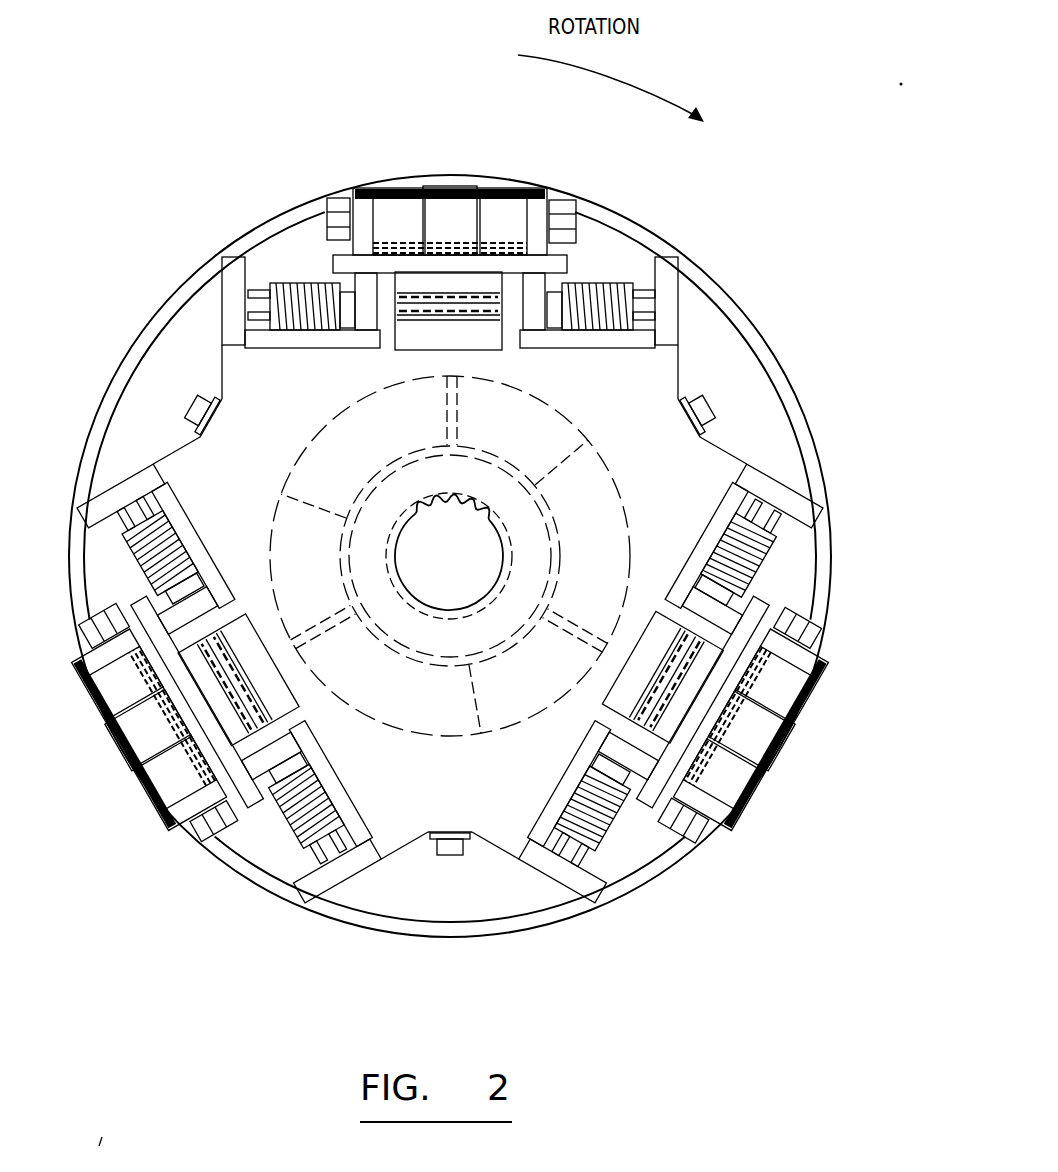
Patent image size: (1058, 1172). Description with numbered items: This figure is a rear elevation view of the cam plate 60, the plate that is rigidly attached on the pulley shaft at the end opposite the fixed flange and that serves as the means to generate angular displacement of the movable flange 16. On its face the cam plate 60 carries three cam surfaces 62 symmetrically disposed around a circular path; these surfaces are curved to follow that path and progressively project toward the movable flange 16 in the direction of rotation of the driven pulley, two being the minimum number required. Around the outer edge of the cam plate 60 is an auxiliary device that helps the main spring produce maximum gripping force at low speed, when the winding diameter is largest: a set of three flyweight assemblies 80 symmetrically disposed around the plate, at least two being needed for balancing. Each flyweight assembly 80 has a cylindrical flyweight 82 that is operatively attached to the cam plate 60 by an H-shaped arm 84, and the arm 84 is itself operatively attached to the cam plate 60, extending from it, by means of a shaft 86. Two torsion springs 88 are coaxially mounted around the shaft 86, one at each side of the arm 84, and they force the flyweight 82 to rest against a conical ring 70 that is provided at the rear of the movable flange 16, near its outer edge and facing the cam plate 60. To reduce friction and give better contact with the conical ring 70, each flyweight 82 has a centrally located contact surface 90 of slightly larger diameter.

The movable flange 16 is at (140, 316).
The cam plate 60 is at (270, 440).
The cam surfaces 62 is at (450, 556).
The conical ring 70 is at (746, 362).
The flyweight assemblies 80 is at (450, 494).
The cylindrical flyweight 82 is at (507, 190).
The H-shaped arm 84 is at (533, 216).
The shaft 86 is at (417, 318).
The torsion springs 88 is at (305, 282).
The contact surface 90 is at (455, 186).